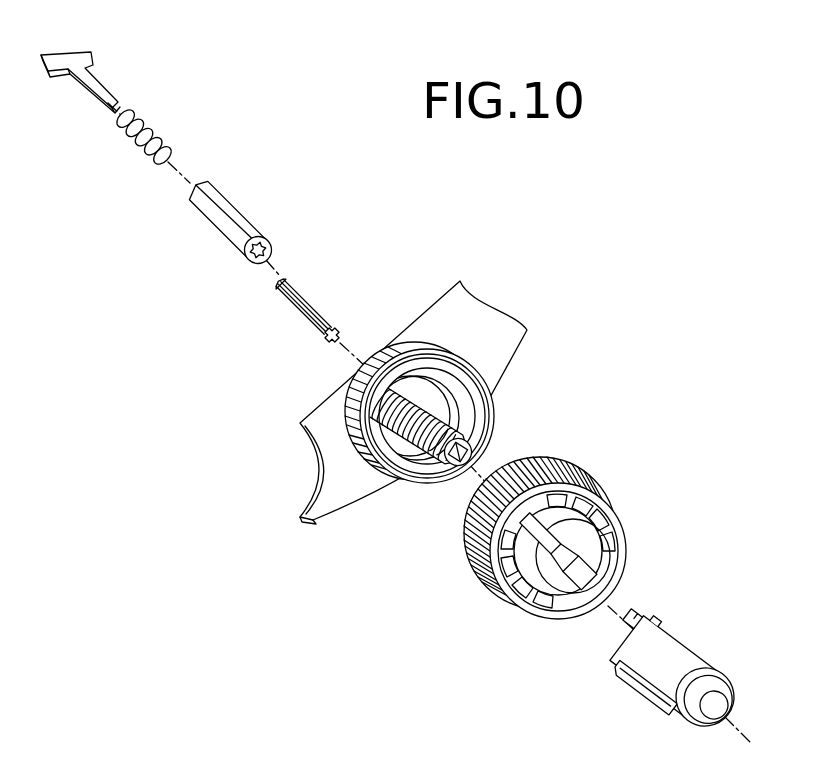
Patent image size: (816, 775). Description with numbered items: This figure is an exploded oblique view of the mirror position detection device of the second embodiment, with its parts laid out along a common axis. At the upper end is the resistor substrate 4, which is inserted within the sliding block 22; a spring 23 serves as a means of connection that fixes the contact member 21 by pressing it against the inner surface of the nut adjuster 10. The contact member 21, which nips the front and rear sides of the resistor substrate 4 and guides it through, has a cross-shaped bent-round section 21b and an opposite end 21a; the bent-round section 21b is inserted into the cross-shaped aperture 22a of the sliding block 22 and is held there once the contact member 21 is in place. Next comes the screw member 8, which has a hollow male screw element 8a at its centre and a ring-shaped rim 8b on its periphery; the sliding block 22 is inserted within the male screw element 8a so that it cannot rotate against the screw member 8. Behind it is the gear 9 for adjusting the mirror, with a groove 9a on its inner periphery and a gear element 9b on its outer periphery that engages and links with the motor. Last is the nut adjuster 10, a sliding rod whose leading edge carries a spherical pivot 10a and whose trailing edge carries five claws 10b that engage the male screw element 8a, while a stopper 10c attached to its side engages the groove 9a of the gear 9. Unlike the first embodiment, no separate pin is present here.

The resistor substrate 4 is at (87, 60).
The spring 23 is at (158, 133).
The sliding block 22 is at (242, 217).
The cross-shaped aperture 22a is at (265, 240).
The contact member 21 is at (320, 307).
The pin end 21a is at (280, 282).
The bent-round section 21b is at (337, 328).
The screw member 8 is at (503, 330).
The male screw element 8a is at (483, 457).
The ring-shaped rim 8b is at (358, 393).
The gear 9 is at (520, 520).
The groove 9a is at (522, 530).
The gear element 9b is at (470, 558).
The nut adjuster 10 is at (667, 643).
The spherical pivot 10a is at (696, 722).
The claws 10b is at (640, 620).
The stopper 10c is at (637, 680).